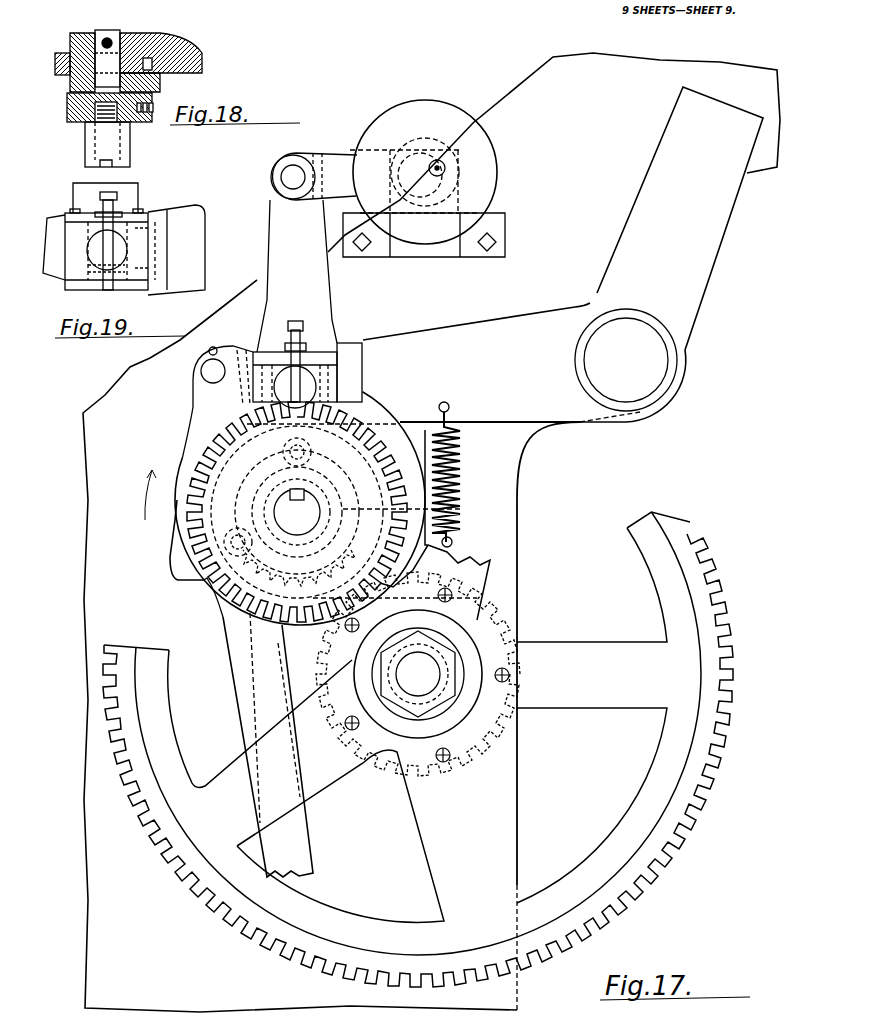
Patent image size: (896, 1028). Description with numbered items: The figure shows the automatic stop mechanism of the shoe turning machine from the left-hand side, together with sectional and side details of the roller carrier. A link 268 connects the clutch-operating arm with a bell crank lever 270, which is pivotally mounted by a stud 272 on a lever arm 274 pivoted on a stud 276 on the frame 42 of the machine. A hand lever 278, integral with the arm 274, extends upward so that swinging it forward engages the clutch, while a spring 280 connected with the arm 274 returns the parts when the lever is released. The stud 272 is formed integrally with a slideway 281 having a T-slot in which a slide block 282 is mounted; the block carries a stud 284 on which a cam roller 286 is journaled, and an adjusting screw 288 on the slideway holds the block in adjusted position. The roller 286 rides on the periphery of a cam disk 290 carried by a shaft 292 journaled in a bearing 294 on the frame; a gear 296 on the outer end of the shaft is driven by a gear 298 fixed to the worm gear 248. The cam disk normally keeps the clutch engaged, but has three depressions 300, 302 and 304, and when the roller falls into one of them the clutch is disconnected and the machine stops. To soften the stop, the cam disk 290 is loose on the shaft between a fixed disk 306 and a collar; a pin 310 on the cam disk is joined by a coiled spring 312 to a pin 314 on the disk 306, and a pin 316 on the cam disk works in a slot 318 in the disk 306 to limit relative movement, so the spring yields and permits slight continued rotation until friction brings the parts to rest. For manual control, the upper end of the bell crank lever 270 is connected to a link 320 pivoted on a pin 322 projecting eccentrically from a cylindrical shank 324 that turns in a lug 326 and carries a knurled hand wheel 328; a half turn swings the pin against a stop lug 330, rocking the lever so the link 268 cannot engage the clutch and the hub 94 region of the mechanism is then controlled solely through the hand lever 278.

In FIG. 17, the frame 42 is at (520, 767).
In FIG. 17, the hub of gear wheel 94 is at (422, 668).
In FIG. 17, the worm gear 248 is at (668, 838).
In FIG. 17, the link 268 is at (203, 412).
In FIG. 18, the bell crank lever 270 is at (63, 58).
In FIG. 19, the bell crank lever 270 is at (53, 233).
In FIG. 17, the bell crank lever 270 is at (322, 297).
In FIG. 18, the stud 272 is at (112, 57).
In FIG. 18, the lever arm 274 is at (200, 67).
In FIG. 19, the lever arm 274 is at (198, 225).
In FIG. 17, the lever arm 274 is at (540, 308).
In FIG. 17, the stud 276 is at (652, 370).
In FIG. 17, the hand lever 278 is at (690, 322).
In FIG. 17, the spring 280 is at (460, 490).
In FIG. 18, the slideway 281 is at (135, 120).
In FIG. 19, the slideway 281 is at (143, 277).
In FIG. 18, the slide block 282 is at (103, 120).
In FIG. 19, the slide block 282 is at (120, 290).
In FIG. 18, the stud 284 is at (95, 148).
In FIG. 19, the stud 284 is at (87, 273).
In FIG. 17, the stud 284 is at (387, 327).
In FIG. 18, the cam roller 286 is at (130, 155).
In FIG. 19, the adjusting screw 288 is at (137, 185).
In FIG. 17, the adjusting screw 288 is at (306, 325).
In FIG. 17, the cam disk 290 is at (402, 423).
In FIG. 17, the shaft 292 is at (307, 512).
In FIG. 17, the bearing 294 is at (510, 521).
In FIG. 17, the gear 296 is at (200, 553).
In FIG. 17, the gear 298 is at (517, 722).
In FIG. 17, the depression 300 is at (363, 390).
In FIG. 17, the depression 302 is at (190, 440).
In FIG. 17, the depression 304 is at (210, 614).
In FIG. 17, the disk 306 is at (435, 511).
In FIG. 17, the pin 310 is at (342, 520).
In FIG. 17, the coiled spring 312 is at (299, 565).
In FIG. 17, the pin 314 is at (255, 511).
In FIG. 17, the pin 316 is at (304, 458).
In FIG. 17, the slot 318 is at (297, 512).
In FIG. 17, the link 320 is at (345, 155).
In FIG. 17, the pin 322 is at (437, 167).
In FIG. 17, the cylindrical shank 324 is at (420, 143).
In FIG. 17, the lug 326 is at (428, 137).
In FIG. 17, the knurled hand wheel 328 is at (497, 150).
In FIG. 17, the stop lug 330 is at (458, 200).